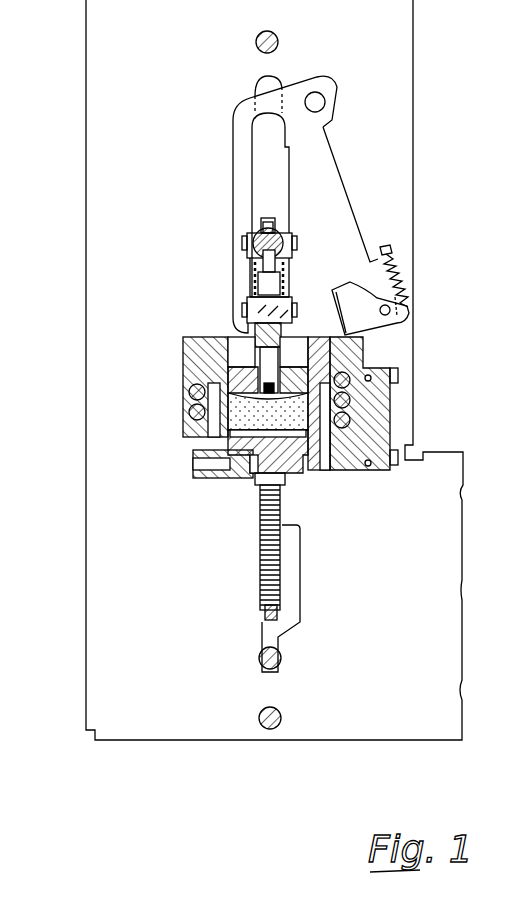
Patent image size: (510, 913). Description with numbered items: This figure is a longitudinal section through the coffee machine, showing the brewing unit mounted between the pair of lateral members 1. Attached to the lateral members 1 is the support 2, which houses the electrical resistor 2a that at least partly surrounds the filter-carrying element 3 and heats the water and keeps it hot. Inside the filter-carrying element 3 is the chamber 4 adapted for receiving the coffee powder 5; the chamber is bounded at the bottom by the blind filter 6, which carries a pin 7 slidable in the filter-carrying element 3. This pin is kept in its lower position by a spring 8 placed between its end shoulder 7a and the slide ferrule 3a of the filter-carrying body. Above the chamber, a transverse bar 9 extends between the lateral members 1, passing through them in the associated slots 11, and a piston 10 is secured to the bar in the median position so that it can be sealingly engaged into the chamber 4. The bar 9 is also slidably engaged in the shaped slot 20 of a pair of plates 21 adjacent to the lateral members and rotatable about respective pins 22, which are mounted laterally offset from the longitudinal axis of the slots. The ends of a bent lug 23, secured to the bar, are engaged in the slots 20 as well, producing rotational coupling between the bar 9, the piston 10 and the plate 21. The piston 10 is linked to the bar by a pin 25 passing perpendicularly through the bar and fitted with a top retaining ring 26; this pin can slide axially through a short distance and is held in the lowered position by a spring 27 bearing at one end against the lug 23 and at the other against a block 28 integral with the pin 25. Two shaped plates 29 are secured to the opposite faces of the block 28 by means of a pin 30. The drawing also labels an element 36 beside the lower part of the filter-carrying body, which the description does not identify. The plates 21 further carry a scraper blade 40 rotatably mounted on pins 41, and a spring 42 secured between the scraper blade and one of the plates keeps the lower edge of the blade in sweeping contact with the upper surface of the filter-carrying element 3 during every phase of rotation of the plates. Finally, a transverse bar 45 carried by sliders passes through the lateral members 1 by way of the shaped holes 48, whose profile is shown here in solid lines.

The lateral members 1 is at (98, 468).
The support 2 is at (355, 463).
The electrical resistor 2a is at (183, 413).
The filter-carrying element 3 is at (307, 470).
The slide ferrule 3a is at (257, 486).
The chamber 4 is at (200, 438).
The coffee powder 5 is at (268, 411).
The blind filter 6 is at (255, 475).
The pin 7 is at (262, 540).
The end shoulder 7a is at (262, 625).
The spring 8 is at (256, 572).
The transverse bar 9 is at (246, 240).
The piston 10 is at (183, 382).
The slots 11 is at (257, 82).
The shaped slot 20 is at (248, 168).
The plates 21 is at (328, 158).
The pins 22 is at (322, 100).
The bent lug 23 is at (255, 266).
The pin 25 is at (275, 258).
The top retaining ring 26 is at (273, 222).
The spring 27 is at (258, 278).
The block 28 is at (292, 302).
The shaped plates 29 is at (250, 290).
The pin 30 is at (240, 320).
The bracket 36 is at (188, 465).
The scraper blade 40 is at (397, 270).
The pins 41 is at (390, 315).
The spring 42 is at (353, 300).
The transverse bar 45 is at (280, 663).
The shaped holes 48 is at (300, 583).